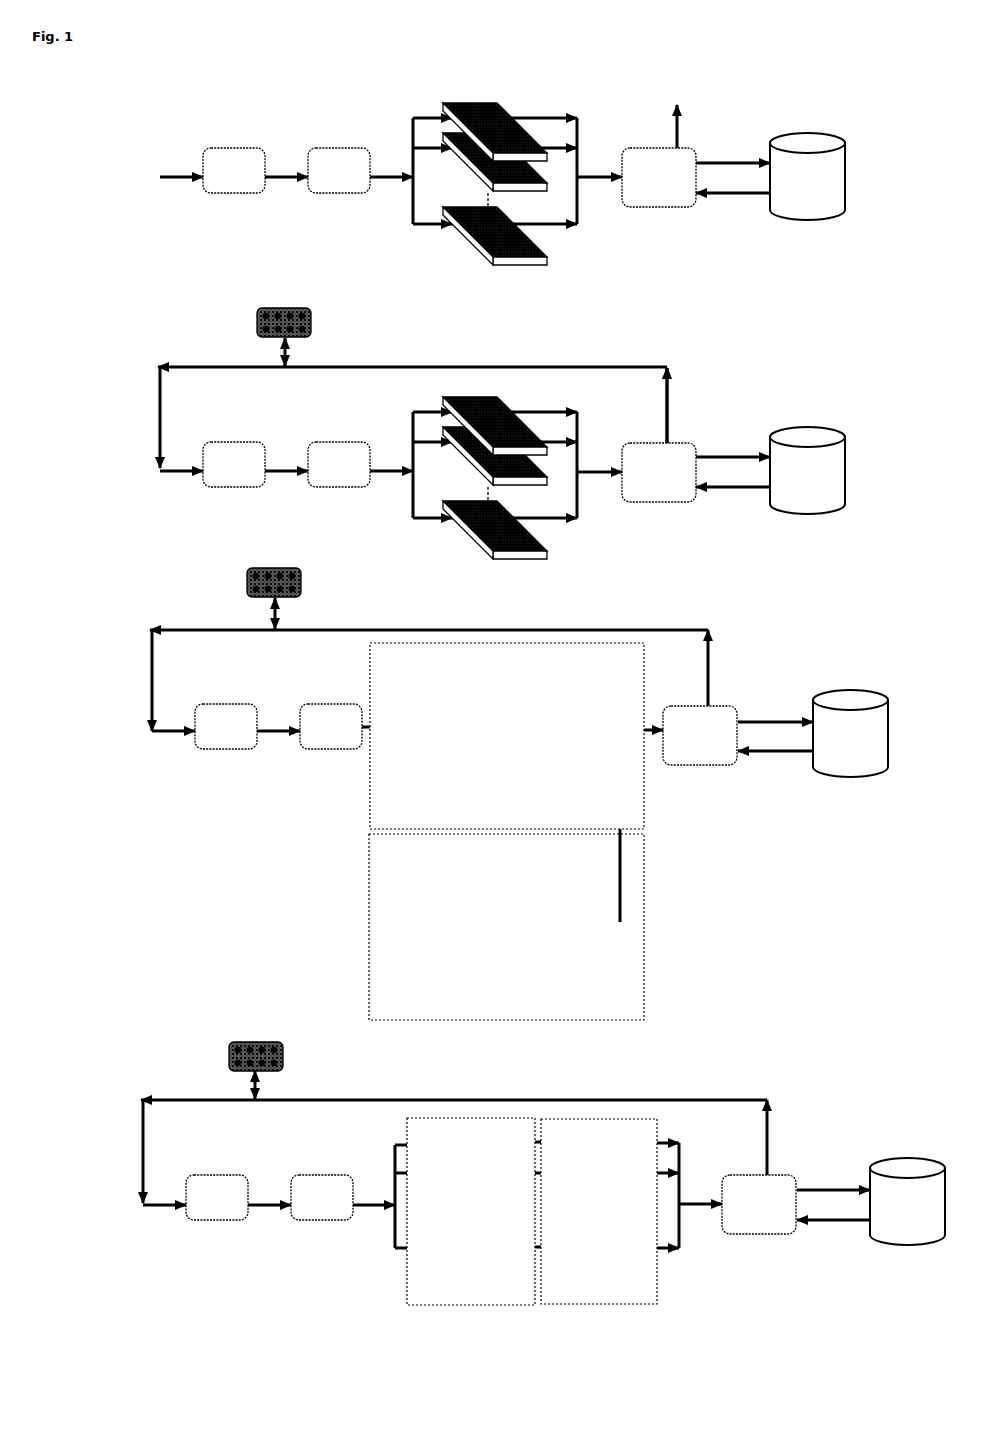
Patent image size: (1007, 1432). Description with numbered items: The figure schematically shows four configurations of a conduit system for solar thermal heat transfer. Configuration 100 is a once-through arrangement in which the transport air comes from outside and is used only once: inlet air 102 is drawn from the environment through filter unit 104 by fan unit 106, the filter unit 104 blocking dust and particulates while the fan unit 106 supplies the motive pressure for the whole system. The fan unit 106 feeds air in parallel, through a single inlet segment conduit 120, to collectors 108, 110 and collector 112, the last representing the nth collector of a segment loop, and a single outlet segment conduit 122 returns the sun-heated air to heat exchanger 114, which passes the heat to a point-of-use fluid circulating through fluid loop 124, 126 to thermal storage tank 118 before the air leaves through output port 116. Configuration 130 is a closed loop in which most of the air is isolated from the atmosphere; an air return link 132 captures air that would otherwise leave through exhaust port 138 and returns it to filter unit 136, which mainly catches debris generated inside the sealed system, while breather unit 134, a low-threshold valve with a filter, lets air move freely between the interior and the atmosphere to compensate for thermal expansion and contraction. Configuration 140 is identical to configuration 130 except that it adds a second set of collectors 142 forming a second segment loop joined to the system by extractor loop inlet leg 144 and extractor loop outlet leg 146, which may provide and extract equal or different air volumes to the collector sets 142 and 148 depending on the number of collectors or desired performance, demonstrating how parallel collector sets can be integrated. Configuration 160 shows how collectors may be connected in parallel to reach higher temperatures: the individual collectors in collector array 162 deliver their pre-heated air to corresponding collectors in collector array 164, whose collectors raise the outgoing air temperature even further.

The once-through configuration 100 is at (150, 140).
The inlet air 102 is at (175, 187).
The filter unit 104 is at (231, 147).
The fan unit 106 is at (335, 195).
The collector 108 is at (437, 105).
The collector 110 is at (455, 165).
The collector 112 is at (458, 240).
The heat exchanger 114 is at (648, 143).
The output port 116 is at (683, 122).
The thermal storage tank 118 is at (795, 225).
The inlet segment conduit 120 is at (385, 185).
The outlet segment conduit 122 is at (595, 185).
The fluid loop 124 is at (720, 198).
The fluid loop 126 is at (740, 155).
The closed loop configuration 130 is at (145, 328).
The air return link 132 is at (457, 363).
The breather unit 134 is at (322, 330).
The filter unit 136 is at (225, 440).
The exhaust port 138 is at (675, 420).
The configuration with second collector set 140 is at (138, 593).
The second set of collectors 142 is at (360, 880).
The extractor loop inlet leg 144 is at (368, 785).
The extractor loop outlet leg 146 is at (645, 810).
The collector set 148 is at (653, 675).
The series-connected collector configuration 160 is at (132, 1047).
The collector array 162 is at (455, 1115).
The collector array 164 is at (597, 1117).